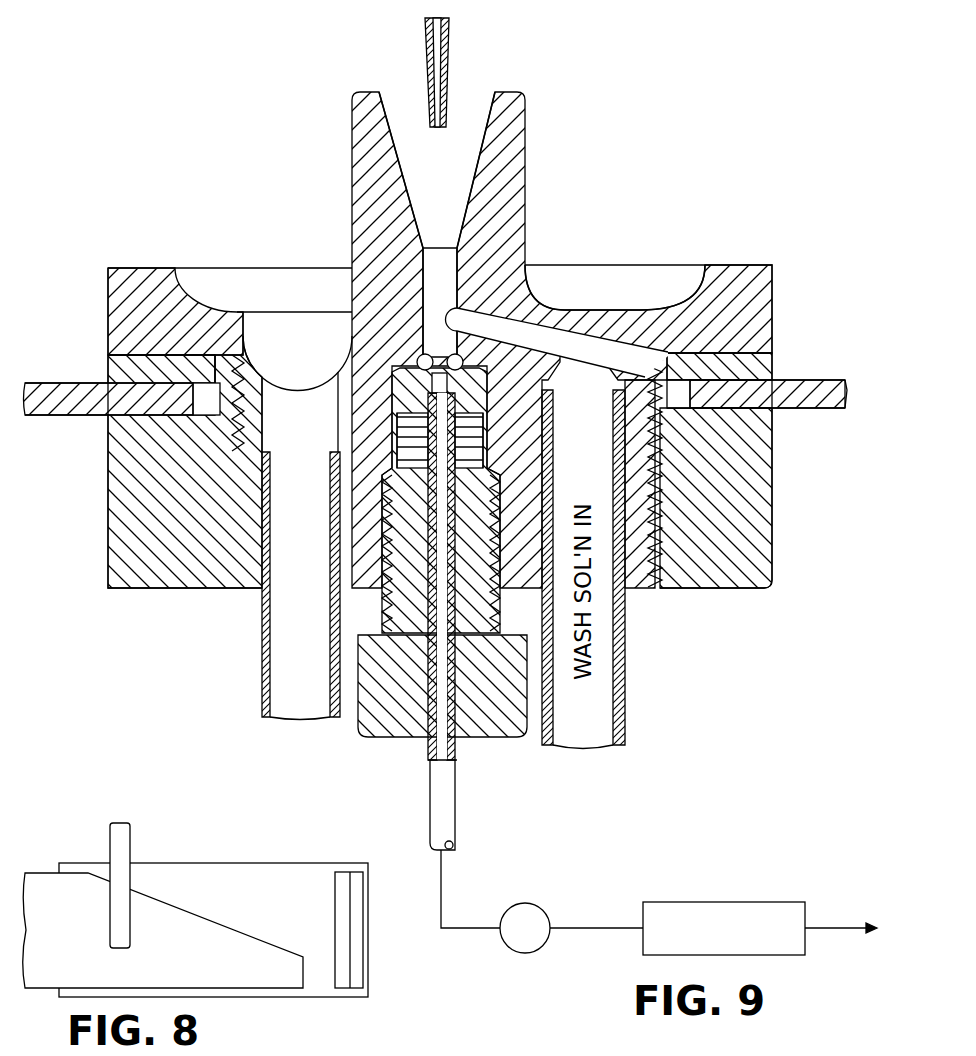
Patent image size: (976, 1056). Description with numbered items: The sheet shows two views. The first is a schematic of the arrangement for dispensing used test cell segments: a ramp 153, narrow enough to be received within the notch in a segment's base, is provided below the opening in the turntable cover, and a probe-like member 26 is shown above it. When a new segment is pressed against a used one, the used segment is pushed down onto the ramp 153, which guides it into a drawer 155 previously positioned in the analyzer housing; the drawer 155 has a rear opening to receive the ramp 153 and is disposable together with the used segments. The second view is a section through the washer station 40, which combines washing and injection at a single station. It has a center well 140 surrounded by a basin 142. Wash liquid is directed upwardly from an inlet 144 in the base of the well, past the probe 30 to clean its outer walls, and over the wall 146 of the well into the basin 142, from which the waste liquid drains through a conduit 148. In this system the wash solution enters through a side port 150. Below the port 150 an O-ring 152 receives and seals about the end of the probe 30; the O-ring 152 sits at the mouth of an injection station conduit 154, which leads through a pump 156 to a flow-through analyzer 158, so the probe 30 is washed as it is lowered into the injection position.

In FIG. 9, the probe 30 is at (448, 67).
In FIG. 9, the center well 140 is at (486, 97).
In FIG. 9, the basin 142 is at (637, 309).
In FIG. 9, the inlet 144 is at (500, 252).
In FIG. 9, the wall 146 is at (518, 146).
In FIG. 9, the conduit 148 is at (262, 654).
In FIG. 9, the side port 150 is at (540, 322).
In FIG. 9, the O-ring 152 is at (416, 360).
In FIG. 9, the injection station conduit 154 is at (430, 776).
In FIG. 9, the pump 156 is at (540, 905).
In FIG. 9, the flow-through analyzer 158 is at (710, 902).
In FIG. 9, the washer station 40 is at (724, 711).
In FIG. 8, the probe 26 is at (131, 853).
In FIG. 8, the ramp 153 is at (233, 928).
In FIG. 8, the drawer 155 is at (305, 997).